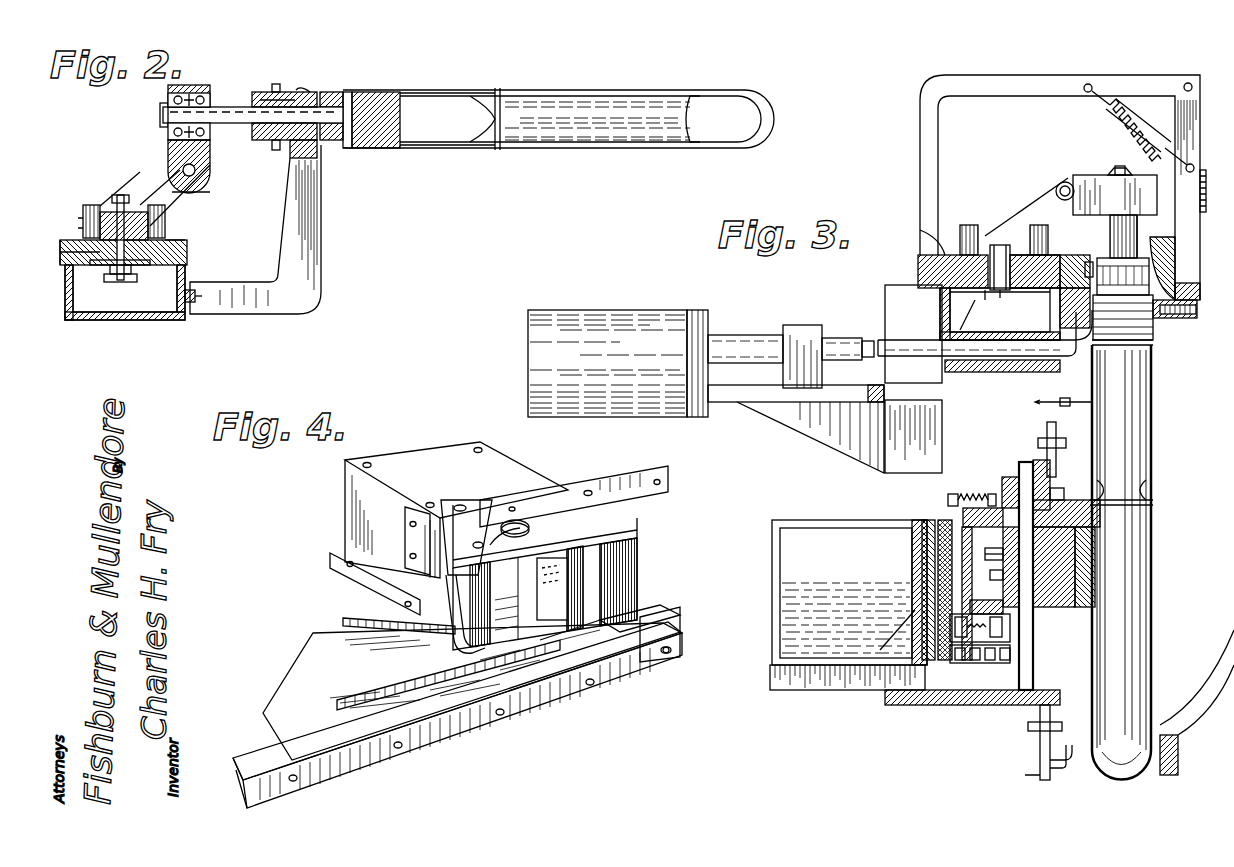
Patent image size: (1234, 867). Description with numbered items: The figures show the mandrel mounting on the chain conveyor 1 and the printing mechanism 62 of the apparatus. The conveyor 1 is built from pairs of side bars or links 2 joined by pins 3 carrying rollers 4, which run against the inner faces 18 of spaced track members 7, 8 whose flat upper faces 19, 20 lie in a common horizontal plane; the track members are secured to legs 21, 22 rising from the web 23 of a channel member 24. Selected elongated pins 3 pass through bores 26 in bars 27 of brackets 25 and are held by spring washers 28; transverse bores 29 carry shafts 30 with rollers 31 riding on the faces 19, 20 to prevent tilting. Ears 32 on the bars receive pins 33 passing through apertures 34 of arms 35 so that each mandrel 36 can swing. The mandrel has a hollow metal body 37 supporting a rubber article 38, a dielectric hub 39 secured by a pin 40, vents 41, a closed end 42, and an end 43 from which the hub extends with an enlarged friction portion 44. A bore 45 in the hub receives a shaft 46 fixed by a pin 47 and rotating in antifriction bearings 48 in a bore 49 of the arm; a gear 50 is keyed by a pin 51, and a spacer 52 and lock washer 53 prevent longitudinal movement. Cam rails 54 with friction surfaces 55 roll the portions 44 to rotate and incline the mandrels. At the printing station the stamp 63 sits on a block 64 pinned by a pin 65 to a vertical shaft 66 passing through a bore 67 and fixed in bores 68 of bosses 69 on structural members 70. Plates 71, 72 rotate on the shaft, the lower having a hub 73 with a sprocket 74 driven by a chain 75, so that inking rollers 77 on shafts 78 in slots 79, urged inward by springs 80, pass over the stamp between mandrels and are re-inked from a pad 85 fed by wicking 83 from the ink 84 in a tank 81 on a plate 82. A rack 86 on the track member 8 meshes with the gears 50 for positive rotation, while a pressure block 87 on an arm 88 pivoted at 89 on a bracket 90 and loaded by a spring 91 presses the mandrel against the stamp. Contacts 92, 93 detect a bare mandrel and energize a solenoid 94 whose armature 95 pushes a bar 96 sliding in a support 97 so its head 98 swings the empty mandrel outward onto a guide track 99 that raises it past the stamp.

In FIG. 3, the endless conveyor 1 is at (966, 315).
In FIG. 2, the side bars or links 2 is at (130, 282).
In FIG. 3, the side bars or links 2 is at (990, 300).
In FIG. 2, the pin 3 is at (119, 282).
In FIG. 3, the pin 3 is at (1004, 298).
In FIG. 2, the roller 4 is at (152, 265).
In FIG. 3, the roller 4 is at (1000, 297).
In FIG. 2, the track member 7 is at (65, 258).
In FIG. 3, the track member 7 is at (918, 262).
In FIG. 2, the track member 8 is at (187, 250).
In FIG. 3, the track member 8 is at (1040, 288).
In FIG. 2, the inner faces 18 is at (110, 272).
In FIG. 3, the inner faces 18 is at (1003, 248).
In FIG. 2, the upper face 19 is at (74, 240).
In FIG. 3, the upper face 19 is at (925, 230).
In FIG. 2, the upper face 20 is at (180, 238).
In FIG. 3, the upper face 20 is at (1052, 256).
In FIG. 2, the leg 21 is at (65, 300).
In FIG. 3, the leg 21 is at (945, 314).
In FIG. 2, the leg 22 is at (190, 290).
In FIG. 3, the leg 22 is at (1035, 372).
In FIG. 2, the web 23 is at (120, 320).
In FIG. 3, the web 23 is at (960, 334).
In FIG. 2, the channel member 24 is at (85, 320).
In FIG. 3, the channel member 24 is at (935, 352).
In FIG. 2, the bracket 25 is at (105, 205).
In FIG. 3, the bracket 25 is at (983, 222).
In FIG. 2, the bore 26 is at (95, 212).
In FIG. 2, the bar 27 is at (130, 200).
In FIG. 2, the keepers or spring washers 28 is at (128, 212).
In FIG. 2, the transverse bores 29 is at (185, 196).
In FIG. 2, the shaft 30 is at (85, 212).
In FIG. 2, the roller 31 is at (165, 215).
In FIG. 3, the roller 31 is at (965, 225).
In FIG. 2, the ear 32 is at (215, 190).
In FIG. 3, the ear 32 is at (1018, 200).
In FIG. 2, the pin 33 is at (196, 172).
In FIG. 3, the pin 33 is at (1062, 182).
In FIG. 2, the aperture 34 is at (210, 156).
In FIG. 2, the arm 35 is at (195, 85).
In FIG. 3, the arm 35 is at (1095, 175).
In FIG. 2, the mandrel 36 is at (497, 88).
In FIG. 3, the mandrel 36 is at (1152, 445).
In FIG. 2, the main body portion 37 is at (462, 150).
In FIG. 3, the main body portion 37 is at (1152, 466).
In FIG. 2, the rubber article 38 is at (590, 92).
In FIG. 3, the rubber article 38 is at (1145, 630).
In FIG. 2, the base or hub portion 39 is at (372, 150).
In FIG. 3, the base or hub portion 39 is at (1153, 345).
In FIG. 2, the pin 40 is at (378, 92).
In FIG. 2, the apertures or vents 41 is at (432, 92).
In FIG. 2, the closed end 42 is at (765, 95).
In FIG. 2, the end 43 is at (345, 90).
In FIG. 3, the end 43 is at (1085, 355).
In FIG. 2, the enlarged portion 44 is at (304, 88).
In FIG. 3, the enlarged portion 44 is at (1155, 330).
In FIG. 2, the bore 45 is at (335, 142).
In FIG. 2, the shaft 46 is at (232, 107).
In FIG. 3, the shaft 46 is at (1115, 159).
In FIG. 2, the pin 47 is at (330, 150).
In FIG. 2, the antifriction bearings 48 is at (168, 98).
In FIG. 2, the bore 49 is at (168, 134).
In FIG. 2, the gear 50 is at (268, 140).
In FIG. 3, the gear 50 is at (1108, 252).
In FIG. 2, the pin 51 is at (270, 84).
In FIG. 2, the spacer 52 is at (252, 142).
In FIG. 3, the spacer 52 is at (1145, 255).
In FIG. 2, the spring retainer or lock washer 53 is at (160, 108).
In FIG. 3, the spring retainer or lock washer 53 is at (1130, 170).
In FIG. 2, the cam rail 54 is at (298, 160).
In FIG. 3, the cam rail 54 is at (1178, 240).
In FIG. 2, the friction surface 55 is at (322, 165).
In FIG. 3, the friction surface 55 is at (1185, 270).
In FIG. 3, the printing or branding mechanism 62 is at (1082, 515).
In FIG. 4, the printing or branding mechanism 62 is at (637, 532).
In FIG. 3, the stamp or branding device 63 is at (1092, 545).
In FIG. 4, the stamp or branding device 63 is at (552, 660).
In FIG. 3, the block 64 is at (1095, 580).
In FIG. 4, the block 64 is at (452, 632).
In FIG. 3, the pin 65 is at (990, 576).
In FIG. 3, the vertical shaft 66 is at (1033, 468).
In FIG. 3, the bore 67 is at (996, 548).
In FIG. 3, the bores 68 is at (1002, 480).
In FIG. 3, the boss 69 is at (1000, 482).
In FIG. 4, the boss 69 is at (522, 522).
In FIG. 3, the structural member 70 is at (1046, 424).
In FIG. 4, the structural member 70 is at (606, 480).
In FIG. 3, the plate 71 is at (963, 512).
In FIG. 4, the plate 71 is at (446, 505).
In FIG. 3, the plate 72 is at (895, 610).
In FIG. 4, the plate 72 is at (490, 700).
In FIG. 3, the hub 73 is at (985, 601).
In FIG. 3, the sprocket 74 is at (995, 665).
In FIG. 4, the sprocket 74 is at (548, 675).
In FIG. 3, the chain 75 is at (958, 665).
In FIG. 4, the chain 75 is at (337, 706).
In FIG. 3, the inking roller 77 is at (960, 540).
In FIG. 4, the inking roller 77 is at (415, 634).
In FIG. 3, the shaft 78 is at (940, 555).
In FIG. 4, the shaft 78 is at (495, 540).
In FIG. 3, the slot 79 is at (955, 633).
In FIG. 4, the slot 79 is at (472, 545).
In FIG. 3, the spring 80 is at (985, 630).
In FIG. 4, the spring 80 is at (466, 505).
In FIG. 3, the ink tank 81 is at (772, 565).
In FIG. 4, the ink tank 81 is at (347, 492).
In FIG. 3, the plate 82 is at (895, 705).
In FIG. 4, the plate 82 is at (310, 660).
In FIG. 3, the wicking 83 is at (880, 680).
In FIG. 3, the body of ink 84 is at (815, 585).
In FIG. 3, the pad 85 is at (915, 572).
In FIG. 4, the pad 85 is at (410, 535).
In FIG. 3, the rack 86 is at (1080, 262).
In FIG. 3, the pressure block 87 is at (1175, 322).
In FIG. 3, the arm 88 is at (1195, 150).
In FIG. 3, the pivot 89 is at (1192, 84).
In FIG. 3, the bracket 90 is at (968, 82).
In FIG. 3, the spring 91 is at (1115, 120).
In FIG. 3, the electrical contact 92 is at (1082, 405).
In FIG. 3, the electrical contact 93 is at (1082, 765).
In FIG. 3, the solenoid 94 is at (605, 318).
In FIG. 3, the armature 95 is at (740, 338).
In FIG. 3, the bar 96 is at (880, 340).
In FIG. 3, the support 97 is at (990, 372).
In FIG. 3, the head 98 is at (1062, 305).
In FIG. 3, the guide track 99 is at (1198, 735).